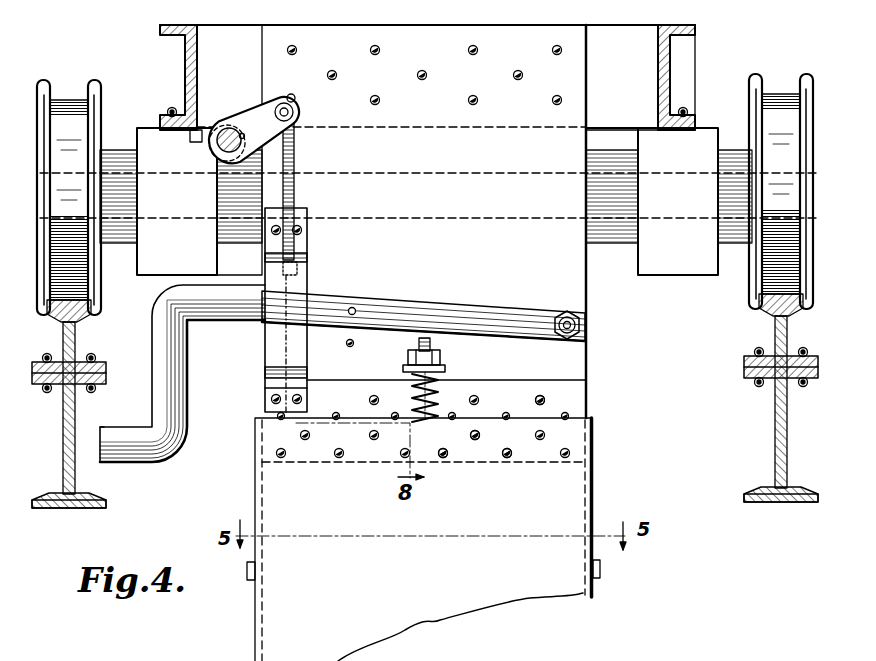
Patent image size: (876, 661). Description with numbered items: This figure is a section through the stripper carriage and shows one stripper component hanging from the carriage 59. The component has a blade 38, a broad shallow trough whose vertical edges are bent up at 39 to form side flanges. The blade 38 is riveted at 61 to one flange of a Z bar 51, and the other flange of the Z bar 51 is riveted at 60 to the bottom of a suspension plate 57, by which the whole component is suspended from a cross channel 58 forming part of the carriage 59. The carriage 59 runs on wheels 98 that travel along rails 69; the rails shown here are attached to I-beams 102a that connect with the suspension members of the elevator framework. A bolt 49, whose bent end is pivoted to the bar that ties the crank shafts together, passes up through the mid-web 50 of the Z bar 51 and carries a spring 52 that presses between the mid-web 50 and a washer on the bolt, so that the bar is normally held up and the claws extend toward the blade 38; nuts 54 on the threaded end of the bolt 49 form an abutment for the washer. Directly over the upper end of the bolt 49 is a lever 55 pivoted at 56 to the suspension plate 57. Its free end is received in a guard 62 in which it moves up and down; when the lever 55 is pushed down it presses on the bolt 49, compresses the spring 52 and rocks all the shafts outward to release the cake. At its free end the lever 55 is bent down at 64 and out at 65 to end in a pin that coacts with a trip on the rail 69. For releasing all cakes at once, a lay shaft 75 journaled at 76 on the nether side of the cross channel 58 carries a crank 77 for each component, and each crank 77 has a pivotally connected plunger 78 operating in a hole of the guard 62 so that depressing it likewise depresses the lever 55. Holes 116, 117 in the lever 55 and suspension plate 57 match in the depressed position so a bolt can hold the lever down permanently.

The blade 38 is at (423, 539).
The bent-up side flanges 39 is at (255, 598).
The bolt 49 is at (442, 377).
The mid-web 50 is at (590, 402).
The Z bar 51 is at (497, 455).
The spring 52 is at (410, 370).
The nuts 54 is at (441, 358).
The lever 55 is at (445, 304).
The pivot 56 is at (582, 325).
The suspension plate 57 is at (586, 272).
The cross channel 58 is at (640, 62).
The carriage 59 is at (694, 27).
The rivets (securing Z bar to suspension plate) 60 is at (541, 395).
The rivets (securing blade to Z bar) 61 is at (474, 440).
The guard 62 is at (302, 348).
The bent-down portion of lever 64 is at (180, 357).
The bent-out end of lever 65 is at (148, 458).
The rail 69 is at (78, 322).
The lay shaft 75 is at (221, 130).
The journal 76 is at (212, 148).
The crank 77 is at (256, 112).
The plunger 78 is at (295, 152).
The wheels 98 is at (70, 100).
The I-beams 102a is at (776, 402).
The hole (in lever) 116 is at (392, 281).
The hole (in suspension plate) 117 is at (352, 348).